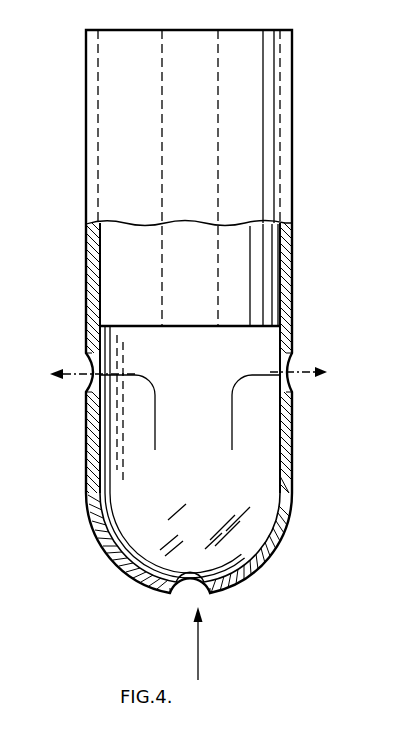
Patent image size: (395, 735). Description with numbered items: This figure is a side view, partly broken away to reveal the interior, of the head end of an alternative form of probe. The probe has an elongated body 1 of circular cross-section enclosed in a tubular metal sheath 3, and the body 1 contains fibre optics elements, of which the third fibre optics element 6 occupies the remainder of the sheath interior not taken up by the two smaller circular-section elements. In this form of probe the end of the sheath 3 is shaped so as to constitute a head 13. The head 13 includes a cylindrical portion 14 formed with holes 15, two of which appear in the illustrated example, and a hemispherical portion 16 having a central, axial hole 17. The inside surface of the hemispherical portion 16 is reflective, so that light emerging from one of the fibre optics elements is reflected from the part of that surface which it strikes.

The body 1 is at (296, 62).
The tubular metal sheath 3 is at (247, 130).
The third fibre optics element 6 is at (200, 260).
The head 13 is at (297, 415).
The cylindrical portion 14 is at (88, 420).
The holes 15 is at (92, 362).
The hemispherical portion 16 is at (282, 547).
The central axial hole 17 is at (178, 602).